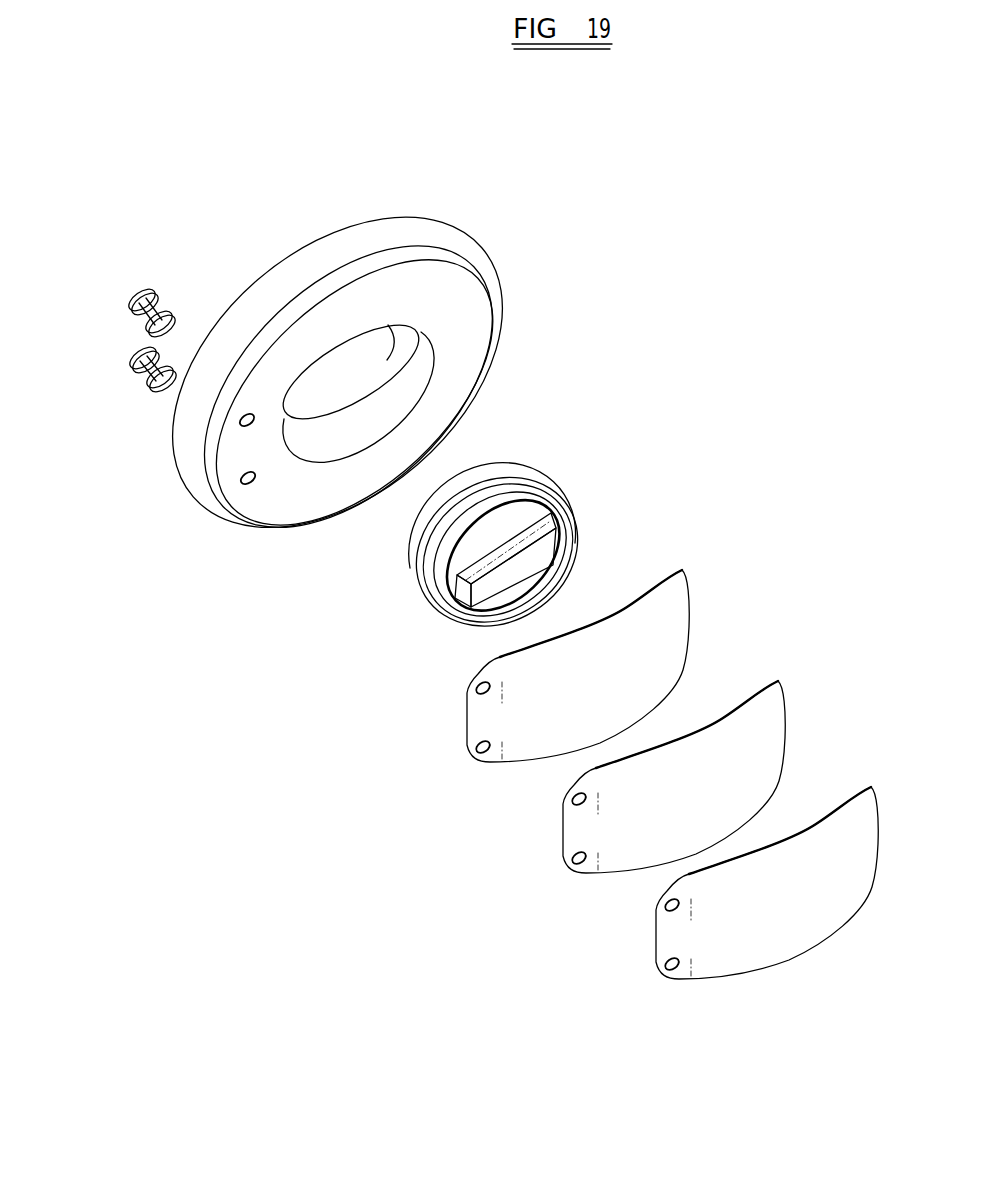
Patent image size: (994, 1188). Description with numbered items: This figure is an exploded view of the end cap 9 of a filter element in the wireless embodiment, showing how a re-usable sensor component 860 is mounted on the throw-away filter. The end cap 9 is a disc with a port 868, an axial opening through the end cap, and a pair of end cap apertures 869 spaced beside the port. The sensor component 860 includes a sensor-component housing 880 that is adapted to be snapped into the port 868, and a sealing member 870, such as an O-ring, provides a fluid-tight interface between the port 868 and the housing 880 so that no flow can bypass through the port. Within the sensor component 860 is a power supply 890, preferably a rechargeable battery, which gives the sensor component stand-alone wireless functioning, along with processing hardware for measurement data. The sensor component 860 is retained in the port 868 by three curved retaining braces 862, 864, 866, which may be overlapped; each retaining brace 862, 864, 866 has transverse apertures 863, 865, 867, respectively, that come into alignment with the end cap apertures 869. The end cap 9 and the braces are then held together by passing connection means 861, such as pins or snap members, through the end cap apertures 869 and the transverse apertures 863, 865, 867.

The end cap 9 is at (482, 300).
The port 868 is at (358, 362).
The end cap apertures 869 is at (243, 430).
The connection means 861 is at (133, 346).
The sensor component 860 is at (562, 462).
The sealing member 870 is at (412, 560).
The sensor-component housing 880 is at (565, 537).
The power supply 890 is at (467, 608).
The retaining brace 862 is at (673, 623).
The transverse apertures 863 is at (470, 692).
The retaining brace 864 is at (757, 713).
The transverse apertures 865 is at (575, 803).
The retaining brace 866 is at (855, 823).
The transverse apertures 867 is at (662, 913).